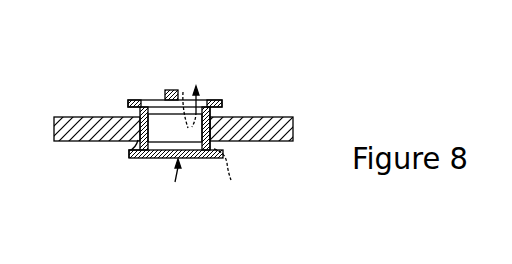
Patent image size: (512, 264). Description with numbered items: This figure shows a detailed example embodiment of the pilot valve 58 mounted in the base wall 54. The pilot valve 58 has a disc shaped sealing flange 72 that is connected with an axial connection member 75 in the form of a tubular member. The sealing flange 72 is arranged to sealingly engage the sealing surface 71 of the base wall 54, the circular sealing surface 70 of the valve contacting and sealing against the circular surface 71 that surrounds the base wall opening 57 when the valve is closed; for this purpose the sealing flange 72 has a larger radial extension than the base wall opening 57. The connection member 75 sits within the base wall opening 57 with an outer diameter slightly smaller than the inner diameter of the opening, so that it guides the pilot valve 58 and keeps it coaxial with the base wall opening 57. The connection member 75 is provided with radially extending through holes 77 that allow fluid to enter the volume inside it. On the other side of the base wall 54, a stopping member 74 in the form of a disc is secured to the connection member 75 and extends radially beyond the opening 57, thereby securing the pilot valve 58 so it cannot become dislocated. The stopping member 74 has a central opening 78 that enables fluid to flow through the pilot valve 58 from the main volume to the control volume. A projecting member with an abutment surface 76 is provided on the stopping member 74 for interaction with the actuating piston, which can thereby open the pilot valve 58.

The base wall 54 is at (76, 132).
The circular sealing surface 70 is at (118, 115).
The sealing surface 71 is at (132, 149).
The sealing flange 72 is at (158, 159).
The stopping member 74 is at (211, 104).
The connection member 75 is at (212, 112).
The abutment surface 76 is at (170, 90).
The through holes 77 is at (222, 147).
The central opening 78 is at (157, 104).
The base wall opening 57 is at (184, 92).
The pilot valve 58 is at (167, 190).